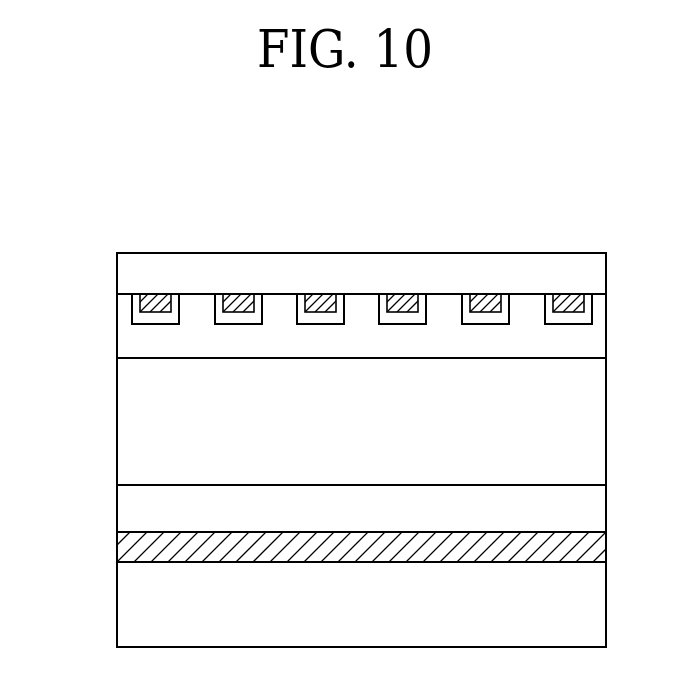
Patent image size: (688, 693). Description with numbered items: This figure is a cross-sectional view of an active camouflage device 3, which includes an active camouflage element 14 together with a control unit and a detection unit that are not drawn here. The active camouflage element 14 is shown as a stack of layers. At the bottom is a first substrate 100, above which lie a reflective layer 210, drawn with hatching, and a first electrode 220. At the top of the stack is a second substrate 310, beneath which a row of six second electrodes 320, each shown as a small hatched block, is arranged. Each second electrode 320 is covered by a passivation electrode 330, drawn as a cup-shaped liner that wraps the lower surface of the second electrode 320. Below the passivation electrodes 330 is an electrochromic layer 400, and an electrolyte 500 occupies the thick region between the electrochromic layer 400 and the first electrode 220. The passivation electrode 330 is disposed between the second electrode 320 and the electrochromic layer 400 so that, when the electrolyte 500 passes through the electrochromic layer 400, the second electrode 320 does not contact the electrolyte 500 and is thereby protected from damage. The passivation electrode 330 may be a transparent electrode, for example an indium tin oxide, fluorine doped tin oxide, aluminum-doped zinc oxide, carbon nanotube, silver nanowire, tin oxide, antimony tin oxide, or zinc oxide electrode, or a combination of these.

The active camouflage device 3 is at (574, 139).
The active camouflage element 14 is at (452, 240).
The first substrate 100 is at (128, 602).
The reflective layer 210 is at (128, 545).
The first electrode 220 is at (128, 507).
The second substrate 310 is at (127, 273).
The second electrode 320 is at (133, 300).
The passivation electrode 330 is at (131, 318).
The electrochromic layer 400 is at (128, 343).
The electrolyte 500 is at (128, 425).